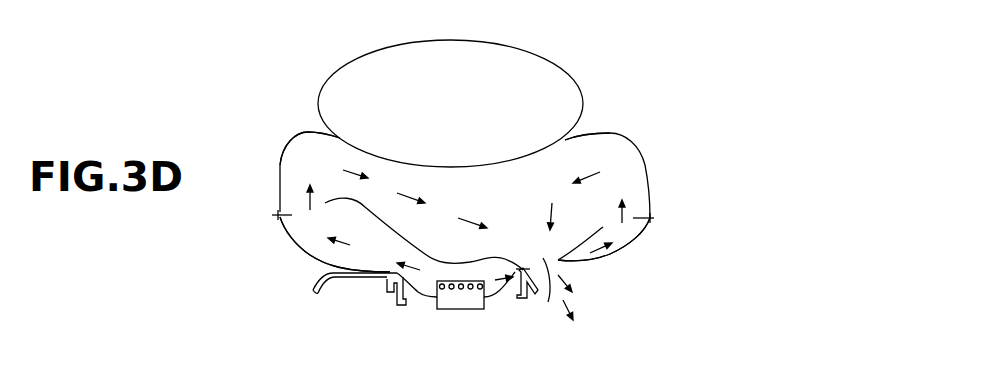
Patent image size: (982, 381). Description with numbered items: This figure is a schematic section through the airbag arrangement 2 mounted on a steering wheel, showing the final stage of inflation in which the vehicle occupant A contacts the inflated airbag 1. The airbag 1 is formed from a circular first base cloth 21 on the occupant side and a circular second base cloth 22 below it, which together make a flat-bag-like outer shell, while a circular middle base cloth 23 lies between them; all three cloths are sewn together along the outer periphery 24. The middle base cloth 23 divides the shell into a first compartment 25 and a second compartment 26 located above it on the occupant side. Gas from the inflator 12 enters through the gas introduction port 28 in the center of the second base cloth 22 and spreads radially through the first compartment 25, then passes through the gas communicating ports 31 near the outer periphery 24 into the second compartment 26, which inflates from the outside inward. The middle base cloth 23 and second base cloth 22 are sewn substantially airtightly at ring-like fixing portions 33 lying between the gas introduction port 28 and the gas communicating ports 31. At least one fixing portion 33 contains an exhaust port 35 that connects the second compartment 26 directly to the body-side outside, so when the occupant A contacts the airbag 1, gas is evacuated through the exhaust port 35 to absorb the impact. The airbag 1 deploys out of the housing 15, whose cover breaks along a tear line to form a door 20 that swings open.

The vehicle occupant A is at (542, 50).
The airbag 1 is at (620, 133).
The airbag arrangement 2 is at (600, 52).
The inflator 12 is at (470, 296).
The housing 15 is at (392, 302).
The door 20 is at (338, 279).
The first base cloth 21 is at (585, 133).
The second base cloth 22 is at (607, 255).
The middle base cloth 23 is at (588, 233).
The outer periphery 24 is at (652, 218).
The first compartment 25 is at (305, 250).
The second compartment 26 is at (300, 148).
The gas introduction port 28 is at (432, 290).
The gas communicating ports 31 is at (628, 227).
The fixing portions 33 is at (558, 260).
The exhaust port 35 is at (548, 302).